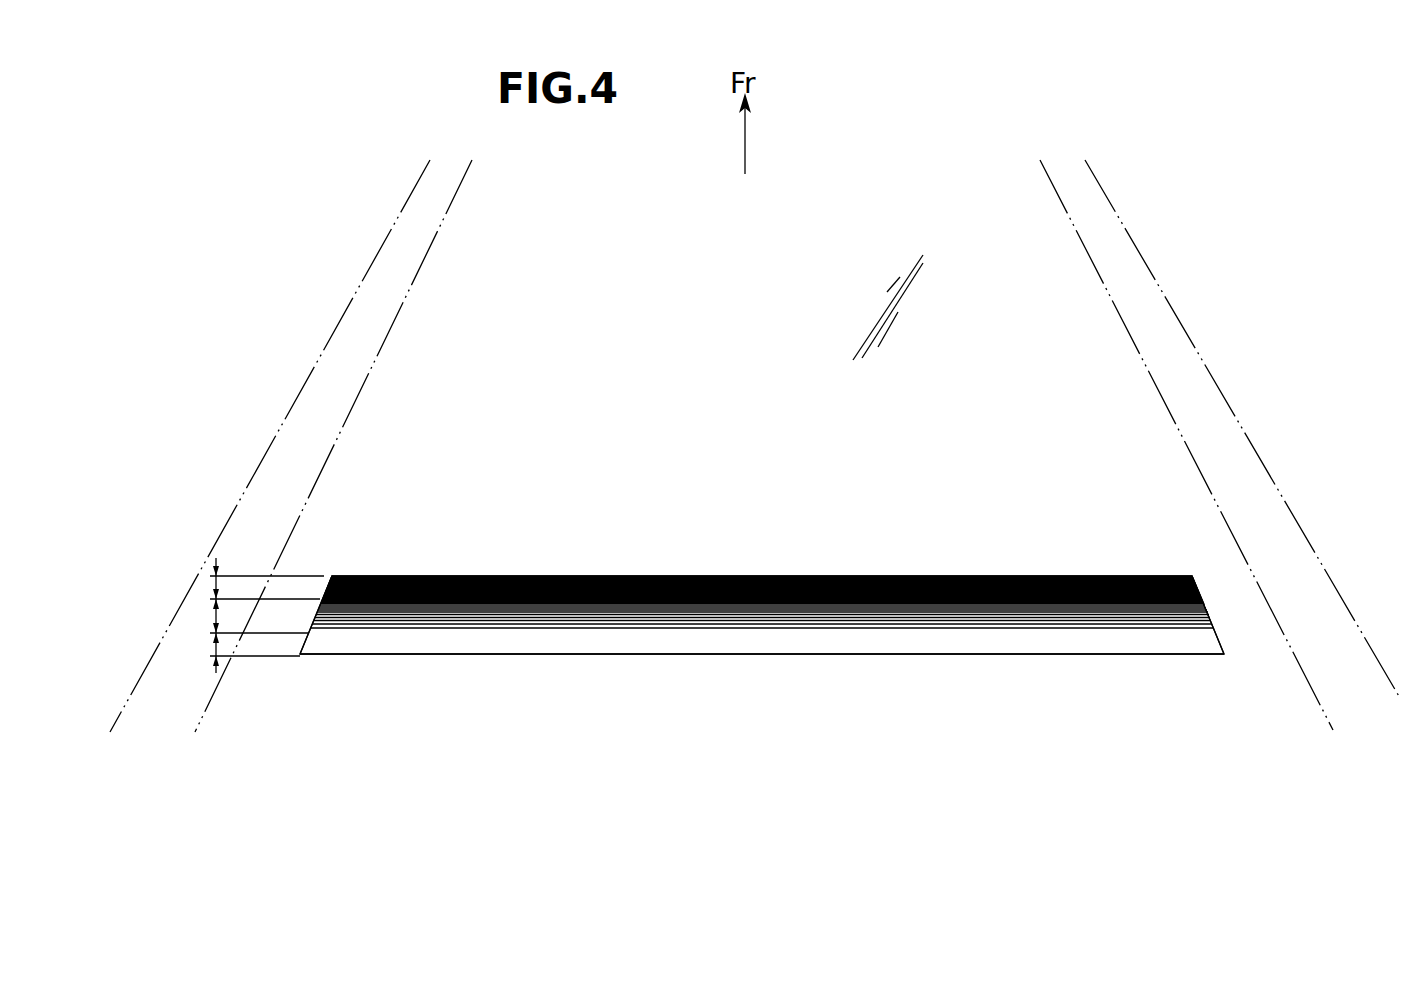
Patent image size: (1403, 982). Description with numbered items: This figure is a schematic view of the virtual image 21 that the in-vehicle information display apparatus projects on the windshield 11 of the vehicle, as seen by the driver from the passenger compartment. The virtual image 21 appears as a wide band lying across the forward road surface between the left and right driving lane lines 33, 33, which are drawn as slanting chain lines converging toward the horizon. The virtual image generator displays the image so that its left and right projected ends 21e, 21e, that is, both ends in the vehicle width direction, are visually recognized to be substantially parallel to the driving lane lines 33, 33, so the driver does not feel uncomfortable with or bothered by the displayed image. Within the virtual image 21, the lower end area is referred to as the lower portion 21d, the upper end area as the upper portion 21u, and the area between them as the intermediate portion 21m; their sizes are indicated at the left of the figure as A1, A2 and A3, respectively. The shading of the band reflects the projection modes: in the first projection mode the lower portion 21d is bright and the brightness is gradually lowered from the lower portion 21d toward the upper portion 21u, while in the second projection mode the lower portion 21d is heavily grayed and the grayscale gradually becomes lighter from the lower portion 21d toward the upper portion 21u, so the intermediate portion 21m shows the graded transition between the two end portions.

The windshield 11 is at (936, 319).
The virtual image 21 is at (946, 565).
The projected ends 21e is at (326, 587).
The upper portion 21u is at (557, 576).
The intermediate portion 21m is at (638, 612).
The lower portion 21d is at (731, 645).
The driving lane lines 33 is at (363, 281).
The size of lower portion A1 is at (212, 649).
The size of upper portion A2 is at (212, 588).
The size of intermediate portion A3 is at (212, 617).